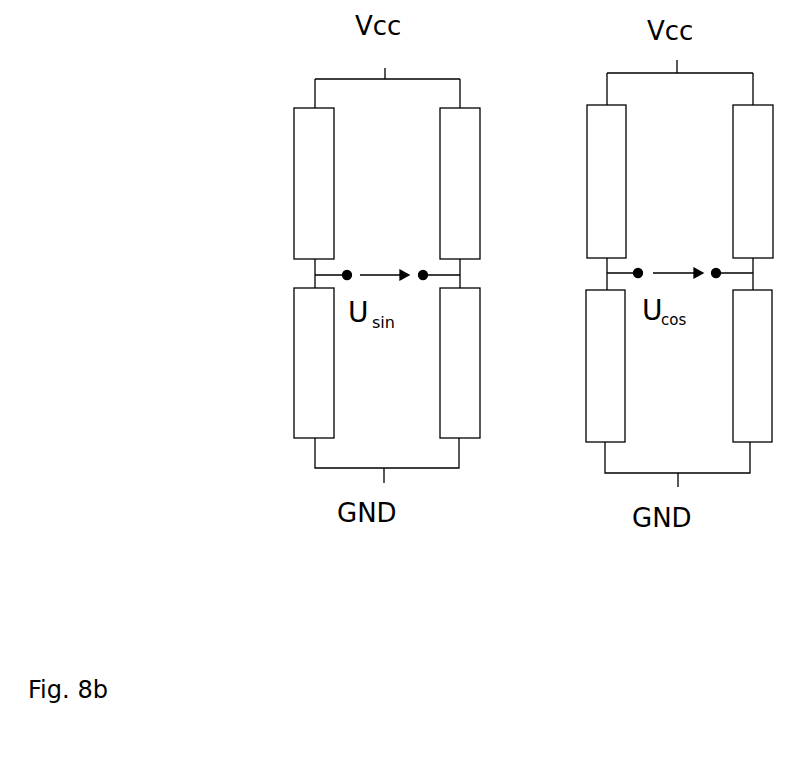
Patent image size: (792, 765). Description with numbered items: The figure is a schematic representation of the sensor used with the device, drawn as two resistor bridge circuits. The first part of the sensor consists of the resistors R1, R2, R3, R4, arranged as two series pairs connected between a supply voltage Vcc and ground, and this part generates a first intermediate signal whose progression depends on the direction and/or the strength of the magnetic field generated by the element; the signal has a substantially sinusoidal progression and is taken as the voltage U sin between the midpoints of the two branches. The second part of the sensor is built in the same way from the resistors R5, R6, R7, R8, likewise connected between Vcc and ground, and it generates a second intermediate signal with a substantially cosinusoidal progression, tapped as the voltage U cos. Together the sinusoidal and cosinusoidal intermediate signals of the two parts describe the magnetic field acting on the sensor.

The resistor R1 is at (312, 193).
The resistor R2 is at (462, 193).
The resistor R3 is at (462, 373).
The resistor R4 is at (312, 373).
The resistor R5 is at (608, 205).
The resistor R6 is at (758, 206).
The resistor R7 is at (757, 387).
The resistor R8 is at (608, 387).